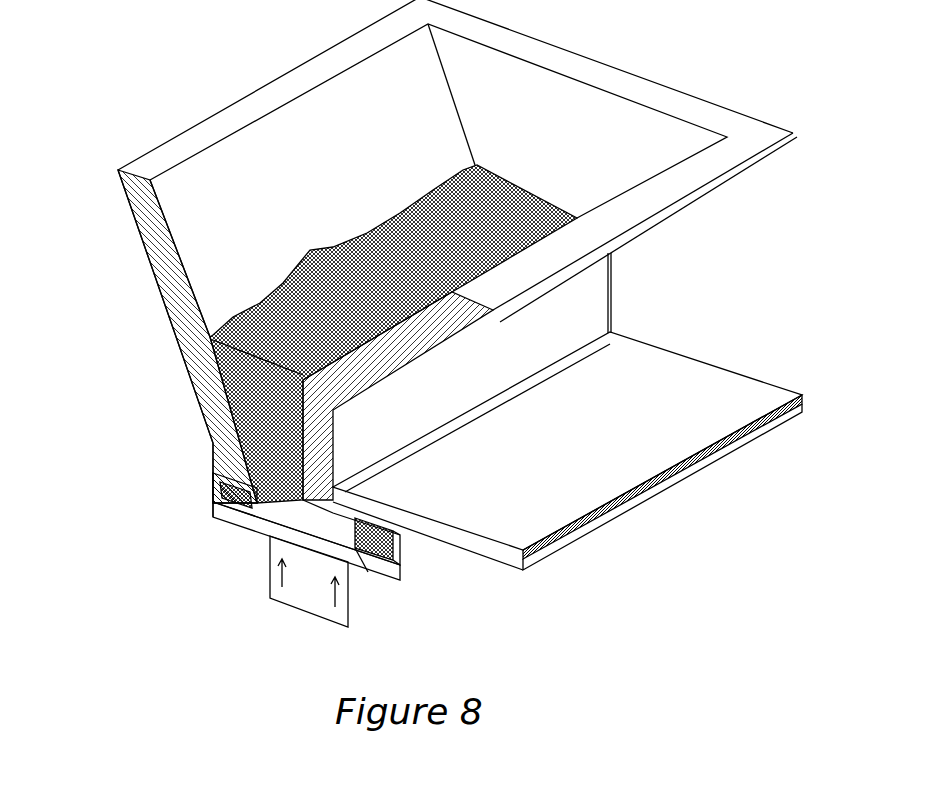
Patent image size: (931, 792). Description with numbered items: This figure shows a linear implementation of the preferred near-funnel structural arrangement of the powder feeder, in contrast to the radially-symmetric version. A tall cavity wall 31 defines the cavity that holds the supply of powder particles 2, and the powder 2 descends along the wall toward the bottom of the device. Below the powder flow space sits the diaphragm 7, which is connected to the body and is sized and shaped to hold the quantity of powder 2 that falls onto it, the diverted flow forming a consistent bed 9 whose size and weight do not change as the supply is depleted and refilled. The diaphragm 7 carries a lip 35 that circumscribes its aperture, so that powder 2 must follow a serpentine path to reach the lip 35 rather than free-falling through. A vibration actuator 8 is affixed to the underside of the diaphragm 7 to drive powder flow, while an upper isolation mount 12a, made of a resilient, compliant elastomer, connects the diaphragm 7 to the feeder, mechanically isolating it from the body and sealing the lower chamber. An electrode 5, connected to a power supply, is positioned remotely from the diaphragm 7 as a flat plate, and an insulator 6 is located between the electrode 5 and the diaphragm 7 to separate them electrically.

The powder particles 2 is at (215, 345).
The electrode 5 is at (710, 410).
The insulator 6 is at (611, 330).
The diaphragm 7 is at (258, 517).
The vibration actuator 8 is at (307, 580).
The bed 9 is at (368, 573).
The upper isolation mount 12a is at (218, 495).
The cavity wall 31 is at (177, 257).
The lip 35 is at (398, 552).